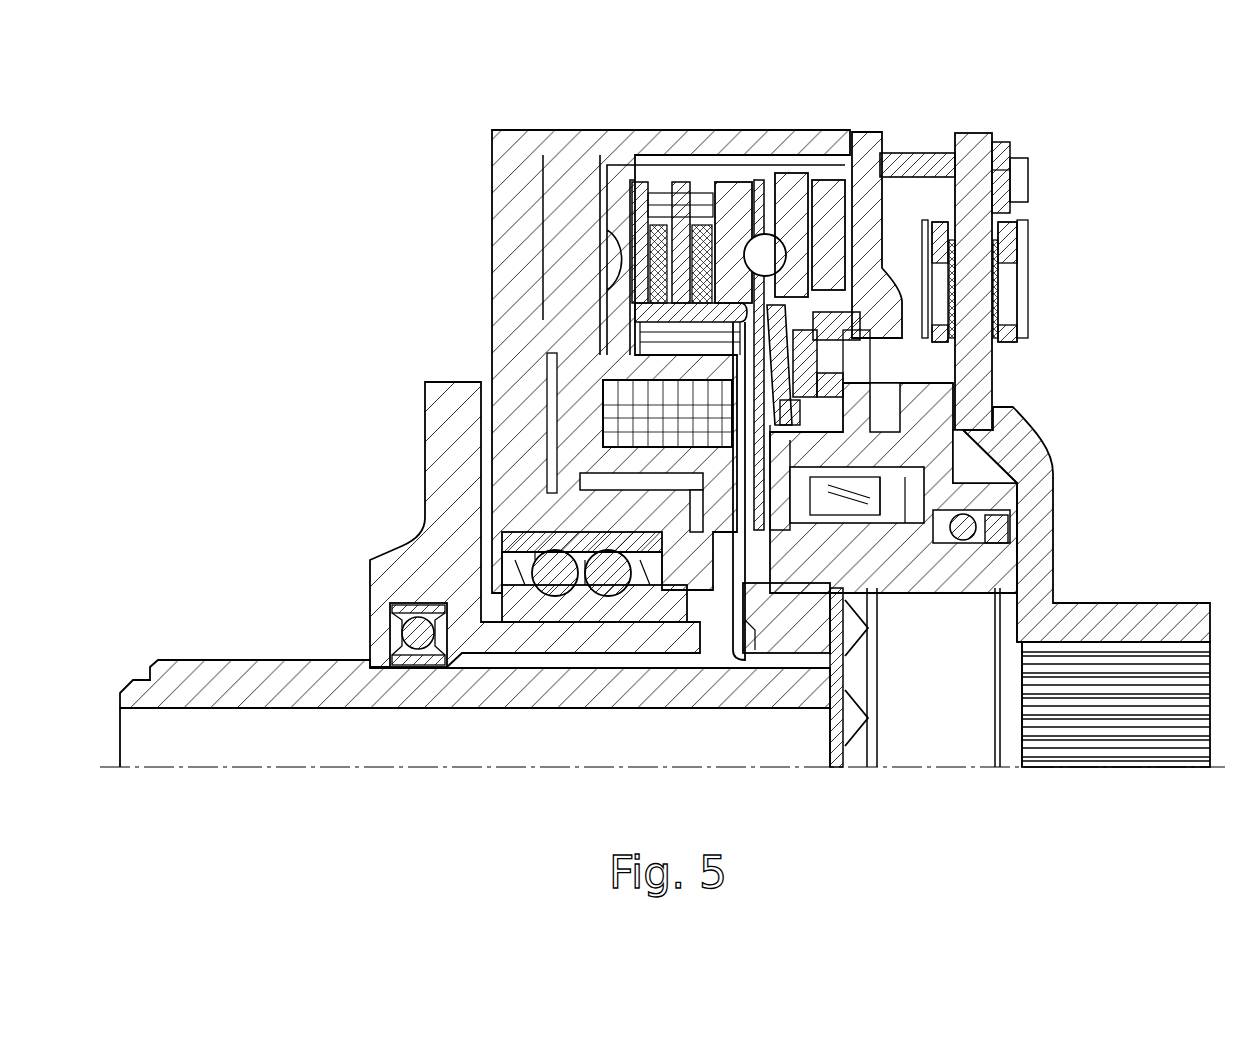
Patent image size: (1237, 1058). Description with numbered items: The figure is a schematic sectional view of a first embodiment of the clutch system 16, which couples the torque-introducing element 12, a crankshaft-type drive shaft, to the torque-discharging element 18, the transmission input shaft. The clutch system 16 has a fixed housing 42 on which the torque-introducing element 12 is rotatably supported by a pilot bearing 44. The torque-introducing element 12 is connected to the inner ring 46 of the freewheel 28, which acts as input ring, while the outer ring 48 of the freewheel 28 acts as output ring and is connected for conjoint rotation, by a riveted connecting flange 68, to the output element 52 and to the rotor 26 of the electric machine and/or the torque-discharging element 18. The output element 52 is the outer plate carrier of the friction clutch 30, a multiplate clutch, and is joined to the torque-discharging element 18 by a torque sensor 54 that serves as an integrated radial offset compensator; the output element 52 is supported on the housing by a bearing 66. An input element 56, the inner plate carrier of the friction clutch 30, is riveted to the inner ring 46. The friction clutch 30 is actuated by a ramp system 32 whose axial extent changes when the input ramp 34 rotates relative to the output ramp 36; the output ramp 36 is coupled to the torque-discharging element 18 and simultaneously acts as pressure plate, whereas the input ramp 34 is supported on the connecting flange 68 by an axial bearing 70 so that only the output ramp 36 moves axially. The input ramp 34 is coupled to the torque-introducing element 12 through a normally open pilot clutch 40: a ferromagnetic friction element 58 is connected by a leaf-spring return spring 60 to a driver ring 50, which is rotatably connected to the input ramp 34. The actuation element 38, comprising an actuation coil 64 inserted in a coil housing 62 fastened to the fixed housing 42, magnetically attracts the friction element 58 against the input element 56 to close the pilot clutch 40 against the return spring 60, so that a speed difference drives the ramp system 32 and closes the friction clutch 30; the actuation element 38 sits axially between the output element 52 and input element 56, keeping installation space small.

The torque-introducing element 12 is at (277, 690).
The clutch system 16 is at (332, 192).
The torque-discharging element 18 is at (1152, 627).
The rotor 26 is at (823, 203).
The freewheel 28 is at (874, 498).
The friction clutch 30 is at (680, 200).
The ramp system 32 is at (763, 200).
The input ramp 34 is at (788, 183).
The output ramp 36 is at (738, 190).
The actuation element 38 is at (412, 262).
The pilot clutch 40 is at (543, 300).
The fixed housing 42 is at (412, 573).
The pilot bearing 44 is at (420, 637).
The inner ring 46 is at (842, 558).
The outer ring 48 is at (923, 448).
The driver ring 50 is at (800, 313).
The output element 52 is at (578, 180).
The torque sensor 54 is at (975, 273).
The input element 56 is at (760, 558).
The friction element 58 is at (770, 433).
The return spring 60 is at (790, 365).
The coil housing 62 is at (568, 393).
The actuation coil 64 is at (627, 397).
The bearing 66 is at (547, 613).
The connecting flange 68 is at (867, 212).
The axial bearing 70 is at (867, 210).